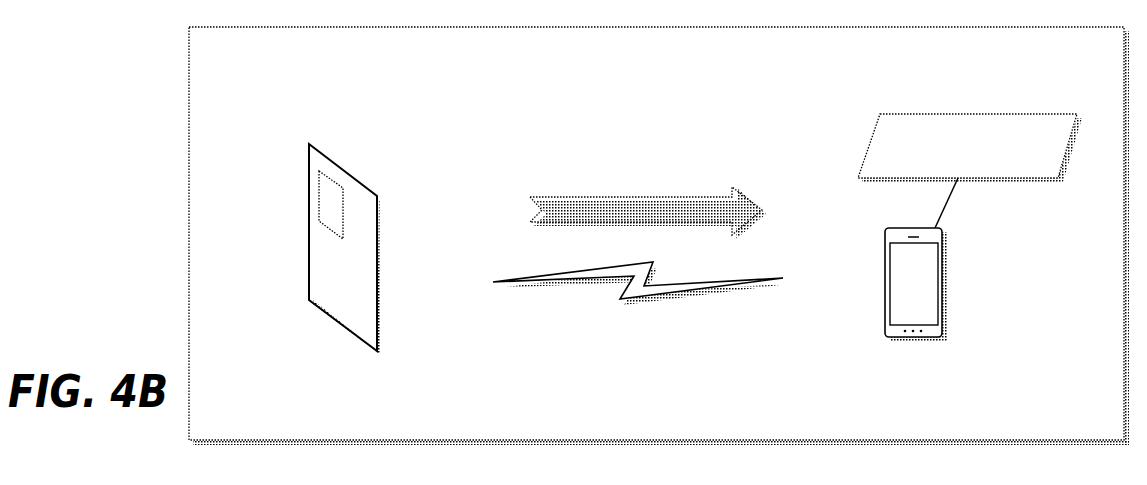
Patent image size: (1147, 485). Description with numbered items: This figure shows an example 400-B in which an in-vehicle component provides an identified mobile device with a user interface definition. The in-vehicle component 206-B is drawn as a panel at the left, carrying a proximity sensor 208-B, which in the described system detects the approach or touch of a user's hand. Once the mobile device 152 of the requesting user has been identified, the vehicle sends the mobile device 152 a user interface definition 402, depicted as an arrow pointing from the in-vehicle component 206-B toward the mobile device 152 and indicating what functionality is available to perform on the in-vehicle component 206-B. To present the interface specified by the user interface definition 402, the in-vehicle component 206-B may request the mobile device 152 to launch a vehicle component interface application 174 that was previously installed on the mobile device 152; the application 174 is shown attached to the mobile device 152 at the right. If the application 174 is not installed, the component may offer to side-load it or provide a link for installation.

The system diagram 400-B is at (155, 80).
The in-vehicle component 206-B is at (308, 183).
The component indicator 208-B is at (318, 207).
The user interface definition 402 is at (652, 197).
The vehicle component interface application 174 is at (983, 114).
The mobile device 152 is at (885, 250).